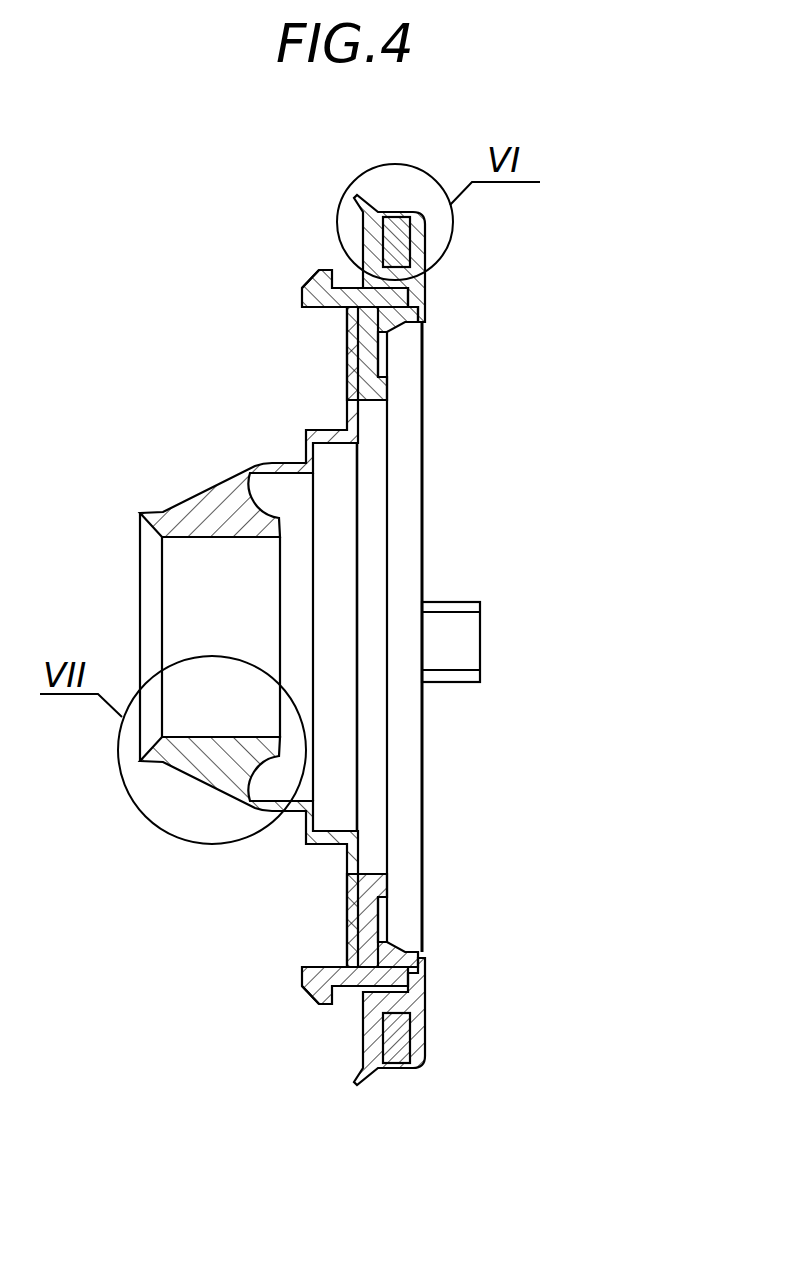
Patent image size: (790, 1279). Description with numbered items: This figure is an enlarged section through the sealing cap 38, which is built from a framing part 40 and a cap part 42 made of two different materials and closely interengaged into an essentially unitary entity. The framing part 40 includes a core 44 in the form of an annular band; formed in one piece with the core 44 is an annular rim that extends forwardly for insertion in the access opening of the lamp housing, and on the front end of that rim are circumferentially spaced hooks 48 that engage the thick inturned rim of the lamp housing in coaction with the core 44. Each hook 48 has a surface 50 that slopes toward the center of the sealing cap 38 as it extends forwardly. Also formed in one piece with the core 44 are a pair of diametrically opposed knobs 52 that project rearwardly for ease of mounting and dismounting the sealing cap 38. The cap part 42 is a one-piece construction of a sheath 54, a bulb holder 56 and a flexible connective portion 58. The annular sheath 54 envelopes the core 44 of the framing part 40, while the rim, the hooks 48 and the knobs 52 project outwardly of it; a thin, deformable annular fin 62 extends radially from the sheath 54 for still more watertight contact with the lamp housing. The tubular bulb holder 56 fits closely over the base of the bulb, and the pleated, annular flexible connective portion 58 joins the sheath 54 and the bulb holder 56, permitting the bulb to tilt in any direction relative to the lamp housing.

The sealing cap 38 is at (397, 622).
The framing part 40 is at (327, 312).
The cap part 42 is at (438, 622).
The core 44 is at (422, 254).
The hook 48 is at (327, 268).
The surface 50 is at (308, 280).
The knob 52 is at (467, 607).
The sheath 54 is at (422, 1018).
The bulb holder 56 is at (197, 767).
The flexible connective portion 58 is at (312, 850).
The annular fin 62 is at (357, 197).